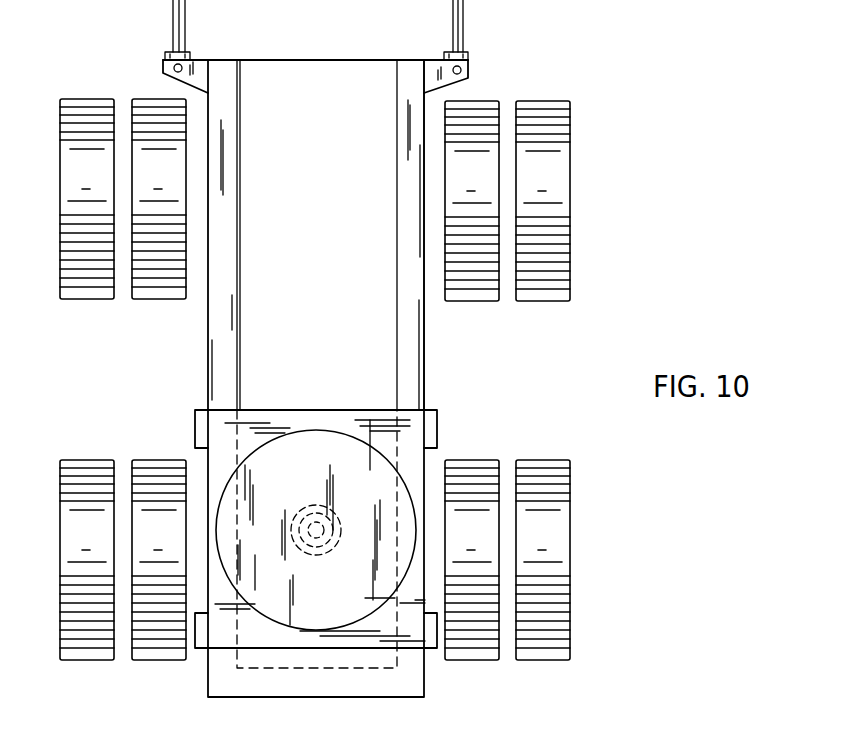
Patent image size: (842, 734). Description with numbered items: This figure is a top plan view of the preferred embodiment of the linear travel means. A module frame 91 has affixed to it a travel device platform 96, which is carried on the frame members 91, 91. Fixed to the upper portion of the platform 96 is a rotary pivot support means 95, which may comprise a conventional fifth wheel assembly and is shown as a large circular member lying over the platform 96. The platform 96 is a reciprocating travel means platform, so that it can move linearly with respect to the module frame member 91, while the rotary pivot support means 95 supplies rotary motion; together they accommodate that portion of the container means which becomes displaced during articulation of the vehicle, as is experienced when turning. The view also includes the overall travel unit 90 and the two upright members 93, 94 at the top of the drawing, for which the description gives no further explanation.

The vehicle frame body 90 is at (426, 350).
The module frame 91 is at (218, 345).
The right upright post 93 is at (462, 22).
The left upright post 94 is at (173, 15).
The rotary pivot support means 95 is at (373, 480).
The travel device platform 96 is at (341, 418).